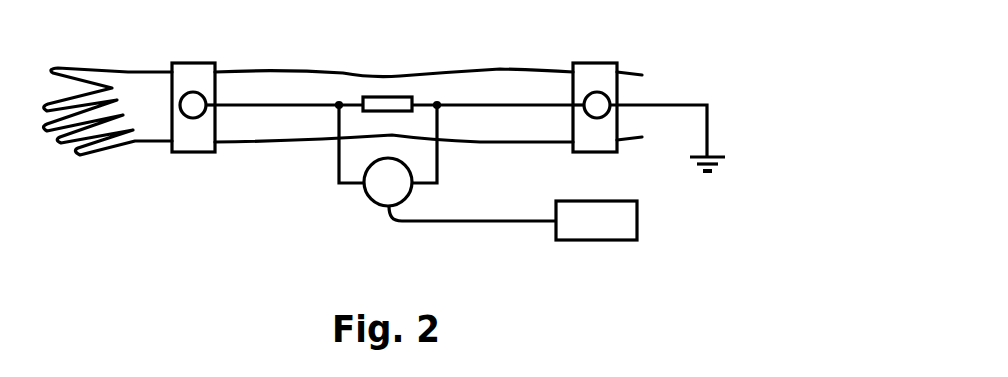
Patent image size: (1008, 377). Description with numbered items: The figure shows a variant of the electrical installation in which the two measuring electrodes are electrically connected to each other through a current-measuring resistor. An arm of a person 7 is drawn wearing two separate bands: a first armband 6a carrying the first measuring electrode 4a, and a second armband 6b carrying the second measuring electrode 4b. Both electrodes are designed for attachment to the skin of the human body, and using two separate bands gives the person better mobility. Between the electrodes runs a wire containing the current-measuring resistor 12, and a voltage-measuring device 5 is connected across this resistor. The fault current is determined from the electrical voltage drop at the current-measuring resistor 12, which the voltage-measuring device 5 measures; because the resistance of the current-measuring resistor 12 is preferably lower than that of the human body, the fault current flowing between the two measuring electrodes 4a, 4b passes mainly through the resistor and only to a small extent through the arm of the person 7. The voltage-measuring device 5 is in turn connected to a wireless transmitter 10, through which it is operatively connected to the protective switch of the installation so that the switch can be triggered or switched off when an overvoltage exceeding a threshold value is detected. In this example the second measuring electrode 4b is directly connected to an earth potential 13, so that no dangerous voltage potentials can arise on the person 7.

The person 7 is at (513, 82).
The first armband 6a is at (190, 77).
The first measuring electrode 4a is at (193, 108).
The second armband 6b is at (597, 77).
The second measuring electrode 4b is at (600, 102).
The current-measuring resistor 12 is at (375, 100).
The voltage-measuring device 5 is at (373, 193).
The wireless transmitter 10 is at (622, 222).
The earth potential 13 is at (712, 135).